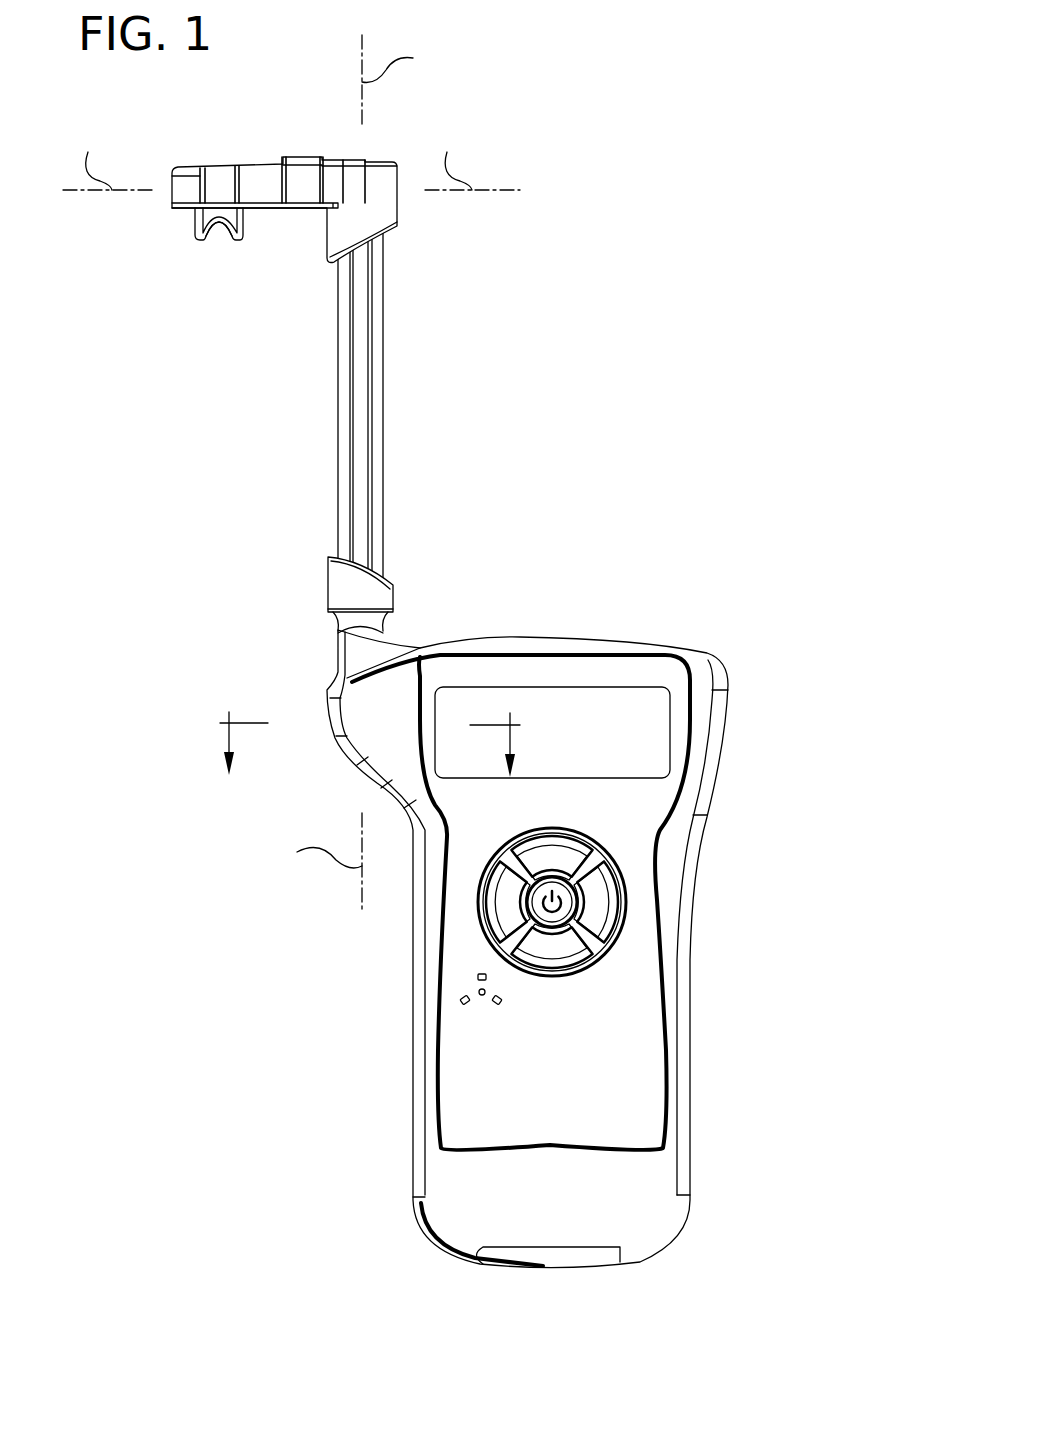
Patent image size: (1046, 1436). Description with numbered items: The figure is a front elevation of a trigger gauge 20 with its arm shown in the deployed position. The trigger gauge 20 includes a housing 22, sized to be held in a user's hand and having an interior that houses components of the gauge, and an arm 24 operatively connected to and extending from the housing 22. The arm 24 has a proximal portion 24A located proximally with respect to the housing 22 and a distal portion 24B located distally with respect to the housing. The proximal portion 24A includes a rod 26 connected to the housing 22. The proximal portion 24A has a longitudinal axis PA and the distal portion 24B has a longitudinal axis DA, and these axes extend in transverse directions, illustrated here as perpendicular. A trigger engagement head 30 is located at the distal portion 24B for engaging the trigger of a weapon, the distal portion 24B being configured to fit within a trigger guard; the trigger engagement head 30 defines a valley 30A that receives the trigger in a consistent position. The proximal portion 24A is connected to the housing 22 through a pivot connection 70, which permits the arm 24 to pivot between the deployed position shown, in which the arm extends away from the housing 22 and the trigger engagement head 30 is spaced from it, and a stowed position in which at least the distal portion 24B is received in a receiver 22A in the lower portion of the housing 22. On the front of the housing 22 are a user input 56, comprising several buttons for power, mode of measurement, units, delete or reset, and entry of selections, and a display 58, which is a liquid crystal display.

The trigger gauge 20 is at (765, 153).
The housing 22 is at (748, 598).
The receiver 22A is at (445, 1245).
The arm 24 is at (472, 260).
The proximal portion 24A is at (394, 391).
The distal portion 24B is at (332, 146).
The rod 26 is at (363, 483).
The trigger engagement head 30 is at (195, 222).
The valley 30A is at (218, 229).
The user input 56 is at (640, 858).
The display 58 is at (610, 690).
The pivot connection 70 is at (246, 644).